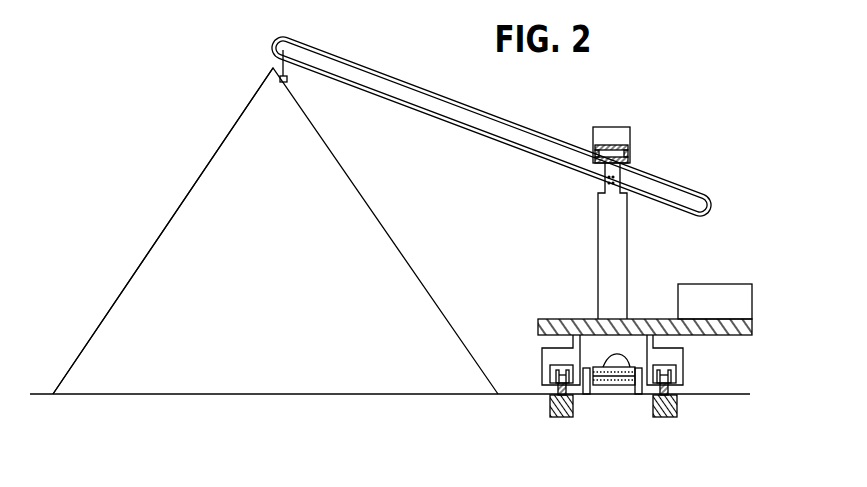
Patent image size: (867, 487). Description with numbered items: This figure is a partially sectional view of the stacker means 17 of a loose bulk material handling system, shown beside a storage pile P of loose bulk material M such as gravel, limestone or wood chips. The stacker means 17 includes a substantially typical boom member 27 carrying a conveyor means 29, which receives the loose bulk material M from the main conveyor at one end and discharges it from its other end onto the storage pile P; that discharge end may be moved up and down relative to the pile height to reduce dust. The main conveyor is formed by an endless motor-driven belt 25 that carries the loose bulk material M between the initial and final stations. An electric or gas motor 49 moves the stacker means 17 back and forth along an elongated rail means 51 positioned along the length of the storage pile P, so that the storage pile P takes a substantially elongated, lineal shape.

The stacker means 17 is at (628, 92).
The endless motor-driven belt 25 is at (612, 387).
The boom member 27 is at (543, 132).
The conveyor means 29 is at (490, 115).
The motor 49 is at (717, 310).
The rail means 51 is at (559, 417).
The loose bulk material M is at (237, 137).
The storage pile P is at (177, 238).